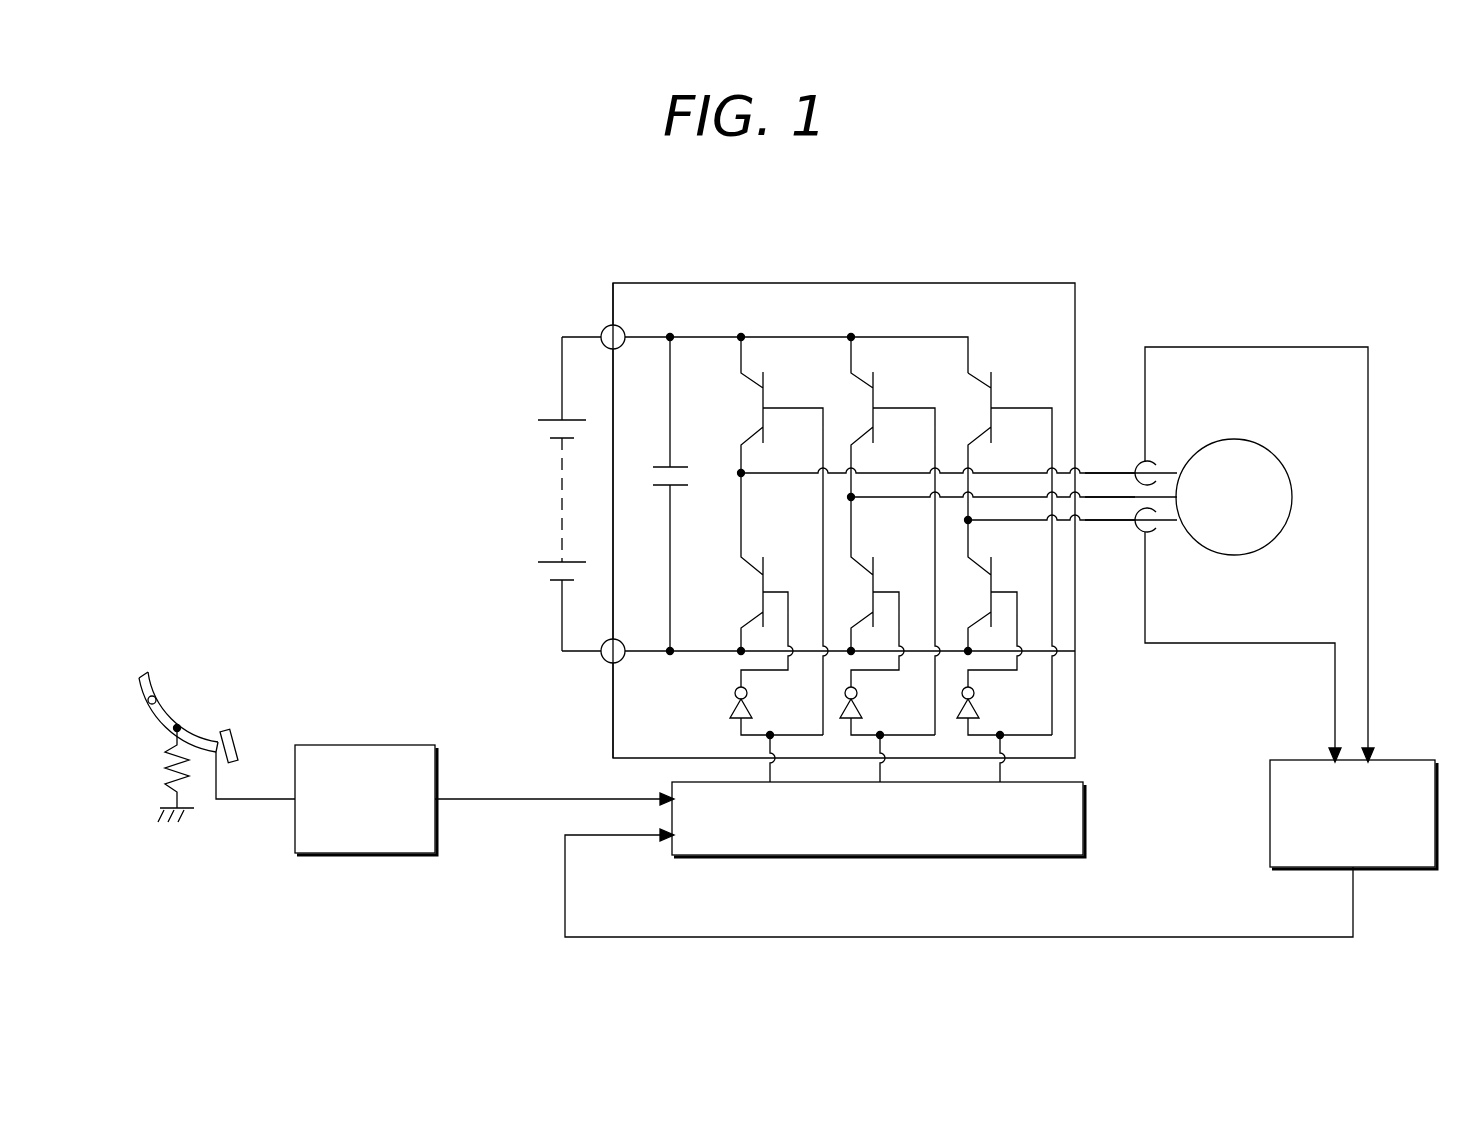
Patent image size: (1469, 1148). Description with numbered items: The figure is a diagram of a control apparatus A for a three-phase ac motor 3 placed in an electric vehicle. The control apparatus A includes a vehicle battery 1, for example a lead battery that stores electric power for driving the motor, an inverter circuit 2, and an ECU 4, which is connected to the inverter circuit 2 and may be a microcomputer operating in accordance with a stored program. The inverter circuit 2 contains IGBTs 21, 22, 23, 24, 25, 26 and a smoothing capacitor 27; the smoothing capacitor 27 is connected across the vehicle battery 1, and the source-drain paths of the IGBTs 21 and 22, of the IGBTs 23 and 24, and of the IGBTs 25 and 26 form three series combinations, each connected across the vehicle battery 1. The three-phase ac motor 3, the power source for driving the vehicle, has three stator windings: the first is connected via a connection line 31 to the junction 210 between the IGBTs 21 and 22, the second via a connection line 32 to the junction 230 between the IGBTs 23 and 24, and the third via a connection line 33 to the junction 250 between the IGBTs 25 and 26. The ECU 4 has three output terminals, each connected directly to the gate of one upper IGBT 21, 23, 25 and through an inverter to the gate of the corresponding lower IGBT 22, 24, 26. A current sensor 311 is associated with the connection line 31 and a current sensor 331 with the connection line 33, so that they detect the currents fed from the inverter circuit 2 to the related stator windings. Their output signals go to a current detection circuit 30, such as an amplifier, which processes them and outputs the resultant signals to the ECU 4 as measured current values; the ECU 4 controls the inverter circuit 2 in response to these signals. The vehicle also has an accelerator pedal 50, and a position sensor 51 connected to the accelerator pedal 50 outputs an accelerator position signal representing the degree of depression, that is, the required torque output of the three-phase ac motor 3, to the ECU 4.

The control apparatus A is at (864, 240).
The vehicle battery 1 is at (568, 420).
The inverter circuit 2 is at (782, 320).
The three-phase ac motor 3 is at (1274, 450).
The ECU 4 is at (1085, 800).
The IGBT 21 is at (770, 386).
The IGBT 22 is at (770, 572).
The IGBT 23 is at (880, 386).
The IGBT 24 is at (880, 572).
The IGBT 25 is at (999, 386).
The IGBT 26 is at (999, 572).
The smoothing capacitor 27 is at (682, 466).
The junction 210 is at (740, 476).
The junction 230 is at (855, 494).
The junction 250 is at (972, 516).
The current detection circuit 30 is at (1416, 760).
The connection line 31 is at (1098, 472).
The connection line 32 is at (1118, 500).
The connection line 33 is at (1094, 524).
The current sensor 311 is at (1154, 458).
The current sensor 331 is at (1158, 538).
The accelerator pedal 50 is at (196, 736).
The position sensor 51 is at (400, 745).